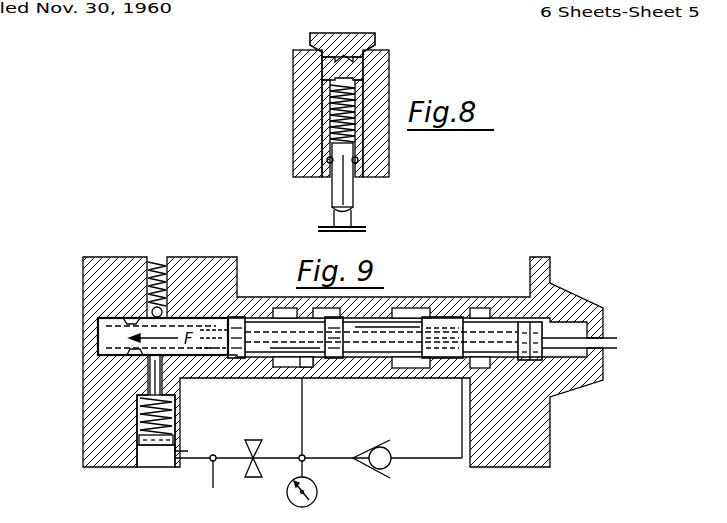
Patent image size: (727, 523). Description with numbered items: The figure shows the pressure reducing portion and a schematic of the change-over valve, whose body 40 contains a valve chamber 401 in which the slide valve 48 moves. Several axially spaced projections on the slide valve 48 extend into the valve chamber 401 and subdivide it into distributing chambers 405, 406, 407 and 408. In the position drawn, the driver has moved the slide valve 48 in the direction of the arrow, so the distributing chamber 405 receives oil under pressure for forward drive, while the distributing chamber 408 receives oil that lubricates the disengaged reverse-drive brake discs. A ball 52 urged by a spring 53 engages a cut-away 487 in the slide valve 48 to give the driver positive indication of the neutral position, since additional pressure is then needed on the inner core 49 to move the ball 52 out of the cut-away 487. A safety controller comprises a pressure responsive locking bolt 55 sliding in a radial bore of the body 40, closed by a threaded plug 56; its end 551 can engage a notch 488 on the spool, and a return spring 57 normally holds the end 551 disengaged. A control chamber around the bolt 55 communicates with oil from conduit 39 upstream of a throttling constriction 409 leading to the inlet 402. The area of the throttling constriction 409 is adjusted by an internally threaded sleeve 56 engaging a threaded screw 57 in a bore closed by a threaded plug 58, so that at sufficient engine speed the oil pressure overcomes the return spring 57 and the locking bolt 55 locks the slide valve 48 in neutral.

In FIG. 8, the change-over valve body 40 is at (380, 73).
In FIG. 9, the change-over valve body 40 is at (190, 307).
In FIG. 8, the threaded plug 58 is at (310, 48).
In FIG. 8, the return spring / threaded screw 57 is at (330, 115).
In FIG. 9, the return spring / threaded screw 57 is at (160, 411).
In FIG. 8, the threaded plug / internally threaded sleeve 56 is at (343, 170).
In FIG. 8, the throttling constriction 409 is at (370, 188).
In FIG. 9, the throttling constriction 409 is at (252, 443).
In FIG. 9, the valve chamber 401 is at (231, 317).
In FIG. 9, the inlet 402 is at (310, 362).
In FIG. 9, the distributing chamber 405 is at (260, 309).
In FIG. 9, the distributing chamber 406 is at (347, 312).
In FIG. 9, the distributing chamber 407 is at (401, 312).
In FIG. 9, the distributing chamber 408 is at (500, 308).
In FIG. 9, the slide valve 48 is at (307, 330).
In FIG. 9, the cut-away 487 is at (133, 325).
In FIG. 9, the notch 488 is at (128, 353).
In FIG. 9, the inner core 49 is at (573, 341).
In FIG. 9, the ball 52 is at (151, 307).
In FIG. 9, the spring 53 is at (162, 286).
In FIG. 9, the pressure responsive locking bolt 55 is at (168, 388).
In FIG. 9, the end of the locking bolt 551 is at (162, 362).
In FIG. 9, the conduit 39 is at (213, 473).